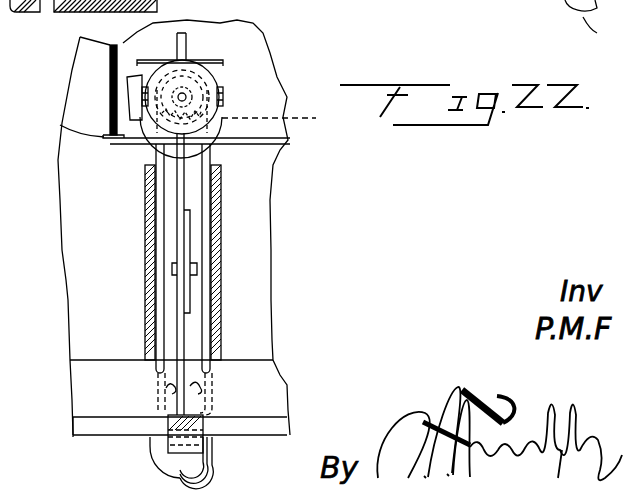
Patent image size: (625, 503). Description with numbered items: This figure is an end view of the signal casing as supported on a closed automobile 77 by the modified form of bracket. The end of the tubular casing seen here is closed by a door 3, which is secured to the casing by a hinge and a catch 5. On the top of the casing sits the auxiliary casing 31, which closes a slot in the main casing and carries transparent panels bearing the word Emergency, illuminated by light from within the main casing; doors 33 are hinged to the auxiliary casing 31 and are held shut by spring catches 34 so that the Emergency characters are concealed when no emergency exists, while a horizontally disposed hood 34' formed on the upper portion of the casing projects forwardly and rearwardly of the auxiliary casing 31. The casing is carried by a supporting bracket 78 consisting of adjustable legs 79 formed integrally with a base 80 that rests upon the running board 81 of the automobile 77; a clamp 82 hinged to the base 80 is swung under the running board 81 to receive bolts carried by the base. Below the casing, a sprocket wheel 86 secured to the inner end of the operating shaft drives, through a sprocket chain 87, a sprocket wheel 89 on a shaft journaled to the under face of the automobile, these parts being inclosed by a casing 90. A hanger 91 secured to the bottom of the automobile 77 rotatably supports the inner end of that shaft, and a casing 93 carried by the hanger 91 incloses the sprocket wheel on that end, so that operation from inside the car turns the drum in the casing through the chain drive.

The door 3 is at (201, 78).
The catch 5 is at (222, 94).
The auxiliary casing 31 is at (187, 27).
The doors 33 is at (200, 43).
The spring catches 34 is at (119, 137).
The hood 34' is at (266, 66).
The automobile 77 is at (85, 81).
The supporting bracket 78 is at (197, 291).
The adjustable legs 79 is at (190, 333).
The base 80 is at (171, 415).
The running board 81 is at (273, 6).
The clamp 82 is at (177, 453).
The sprocket wheel 86 is at (281, 117).
The sprocket chain 87 is at (210, 243).
The sprocket wheel 89 is at (213, 392).
The casing 90 is at (230, 258).
The hanger 91 is at (530, 0).
The casing 93 is at (214, 450).